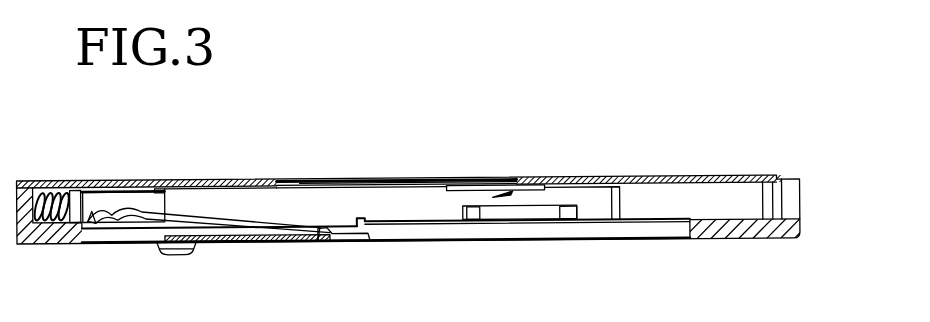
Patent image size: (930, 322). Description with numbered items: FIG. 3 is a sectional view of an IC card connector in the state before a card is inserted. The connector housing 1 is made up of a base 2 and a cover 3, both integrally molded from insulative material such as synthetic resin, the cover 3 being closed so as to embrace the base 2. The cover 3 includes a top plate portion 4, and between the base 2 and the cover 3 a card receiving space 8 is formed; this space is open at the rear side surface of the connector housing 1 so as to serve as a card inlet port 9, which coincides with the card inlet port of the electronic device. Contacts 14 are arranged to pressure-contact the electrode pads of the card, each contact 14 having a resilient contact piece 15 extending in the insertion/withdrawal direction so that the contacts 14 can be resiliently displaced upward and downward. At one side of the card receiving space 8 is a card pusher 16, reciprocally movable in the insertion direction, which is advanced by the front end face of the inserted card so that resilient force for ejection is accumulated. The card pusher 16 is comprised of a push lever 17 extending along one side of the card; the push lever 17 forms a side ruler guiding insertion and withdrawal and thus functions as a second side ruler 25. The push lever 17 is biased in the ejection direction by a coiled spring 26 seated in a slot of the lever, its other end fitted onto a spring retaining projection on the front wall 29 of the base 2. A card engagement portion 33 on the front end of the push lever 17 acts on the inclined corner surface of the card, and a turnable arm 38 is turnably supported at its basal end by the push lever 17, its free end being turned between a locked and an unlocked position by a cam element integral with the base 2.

The connector housing 1 is at (478, 156).
The base 2 is at (737, 230).
The cover 3 is at (670, 176).
The top plate portion 4 is at (592, 178).
The card receiving space 8 is at (493, 190).
The card inlet port 9 is at (790, 200).
The contact 14 is at (344, 243).
The resilient contact piece 15 is at (180, 216).
The card pusher 16 is at (243, 191).
The push lever 17 is at (338, 195).
The second side ruler 25 is at (408, 156).
The coiled spring 26 is at (46, 220).
The front wall 29 is at (30, 183).
The card engagement portion 33 is at (122, 202).
The turnable arm 38 is at (520, 223).